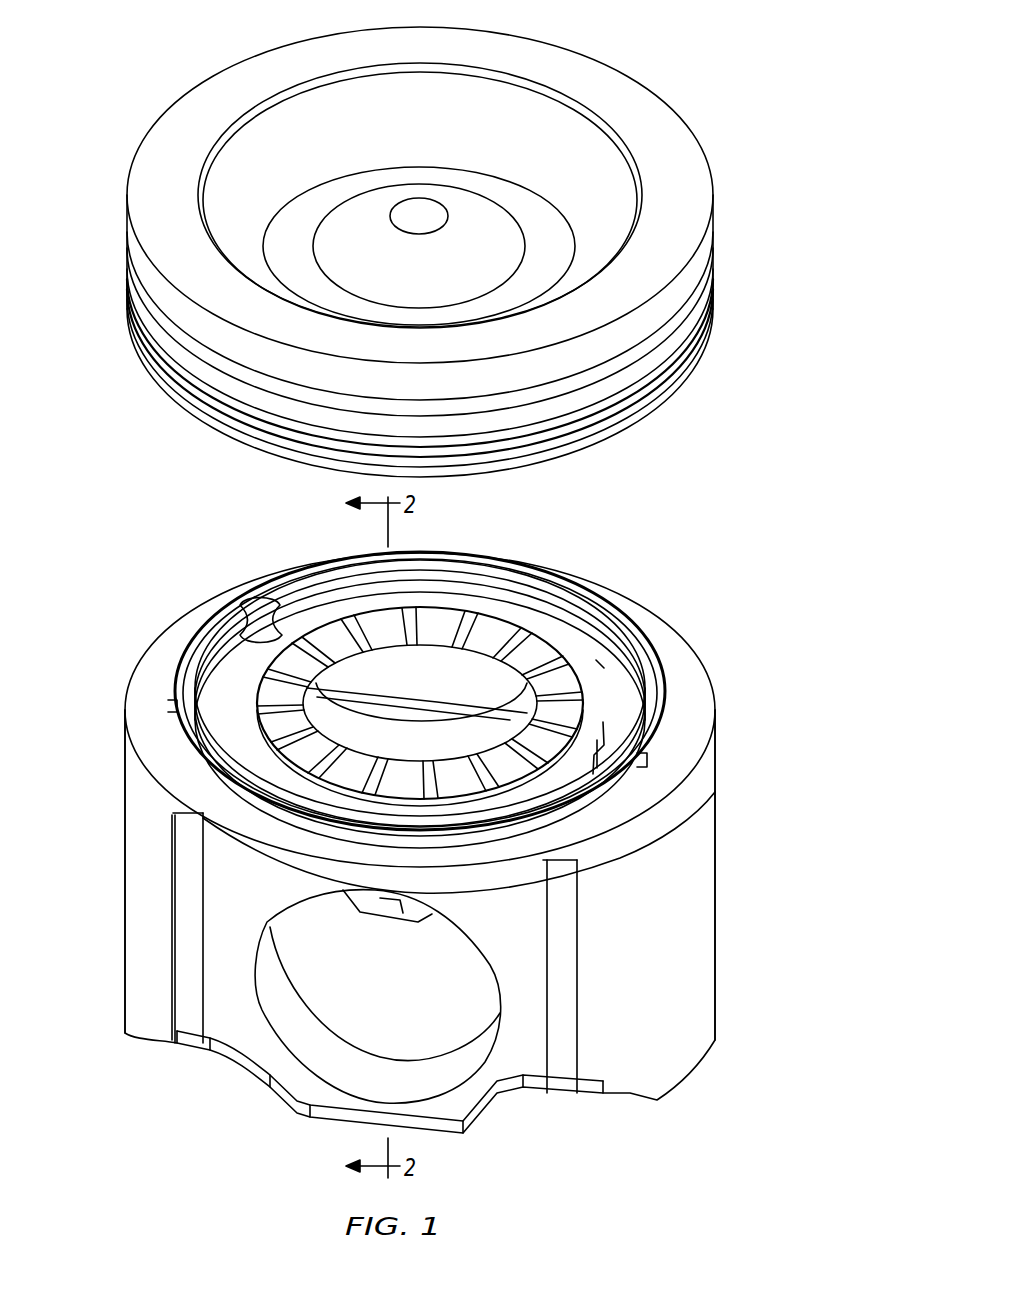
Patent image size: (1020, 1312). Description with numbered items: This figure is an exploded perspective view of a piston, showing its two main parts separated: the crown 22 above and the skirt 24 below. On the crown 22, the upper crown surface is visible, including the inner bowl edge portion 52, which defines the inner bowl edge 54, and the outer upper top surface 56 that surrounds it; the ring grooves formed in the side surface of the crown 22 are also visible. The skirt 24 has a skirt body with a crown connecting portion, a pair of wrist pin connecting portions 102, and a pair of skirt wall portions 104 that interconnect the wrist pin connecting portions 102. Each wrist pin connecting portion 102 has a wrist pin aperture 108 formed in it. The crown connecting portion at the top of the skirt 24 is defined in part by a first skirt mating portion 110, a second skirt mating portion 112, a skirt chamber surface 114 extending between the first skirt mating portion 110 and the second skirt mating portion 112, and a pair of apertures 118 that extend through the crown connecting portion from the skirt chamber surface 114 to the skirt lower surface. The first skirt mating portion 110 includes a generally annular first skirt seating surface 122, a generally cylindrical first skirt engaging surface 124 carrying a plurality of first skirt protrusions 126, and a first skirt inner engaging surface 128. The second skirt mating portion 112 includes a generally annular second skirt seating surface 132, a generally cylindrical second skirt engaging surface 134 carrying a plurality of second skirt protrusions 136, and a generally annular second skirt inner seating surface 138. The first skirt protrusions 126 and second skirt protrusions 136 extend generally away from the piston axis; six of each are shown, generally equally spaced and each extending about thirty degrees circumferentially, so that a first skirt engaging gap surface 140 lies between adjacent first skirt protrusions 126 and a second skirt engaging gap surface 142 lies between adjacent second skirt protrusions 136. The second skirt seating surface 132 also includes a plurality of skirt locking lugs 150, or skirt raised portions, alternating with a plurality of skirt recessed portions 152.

The crown 22 is at (382, 239).
The inner bowl edge portion 52 is at (290, 95).
The inner bowl edge 54 is at (423, 196).
The upper top surface 56 is at (635, 110).
The skirt 24 is at (180, 580).
The wrist pin connecting portions 102 is at (212, 1003).
The skirt wall portions 104 is at (645, 1048).
The wrist pin aperture 108 is at (385, 1076).
The first skirt mating portion 110 is at (173, 752).
The second skirt mating portion 112 is at (524, 619).
The skirt chamber surface 114 is at (650, 670).
The apertures 118 is at (240, 625).
The first skirt seating surface 122 is at (720, 655).
The first skirt engaging surface 124 is at (640, 785).
The first skirt protrusions 126 is at (670, 712).
The first skirt inner engaging surface 128 is at (688, 681).
The second skirt seating surface 132 is at (305, 620).
The second skirt engaging surface 134 is at (465, 832).
The second skirt protrusions 136 is at (597, 662).
The second skirt inner seating surface 138 is at (437, 616).
The first skirt engaging gap surface 140 is at (358, 880).
The second skirt engaging gap surface 142 is at (355, 782).
The skirt locking lugs 150 is at (470, 613).
The skirt recessed portions 152 is at (375, 608).